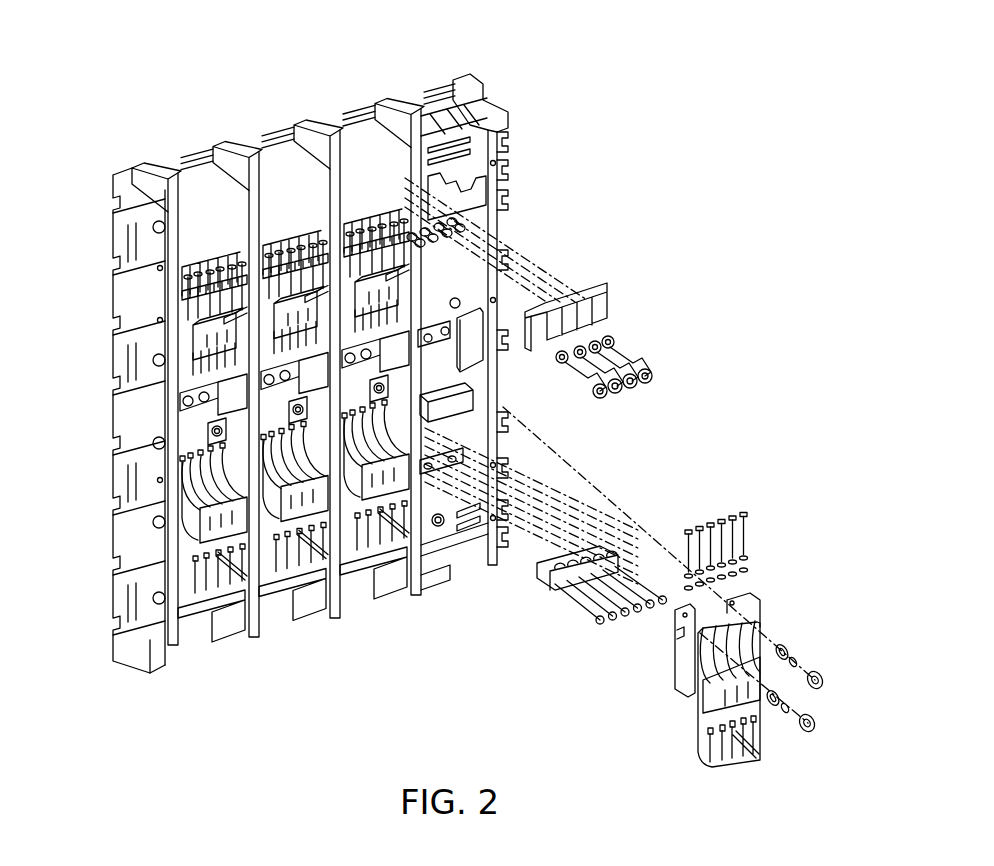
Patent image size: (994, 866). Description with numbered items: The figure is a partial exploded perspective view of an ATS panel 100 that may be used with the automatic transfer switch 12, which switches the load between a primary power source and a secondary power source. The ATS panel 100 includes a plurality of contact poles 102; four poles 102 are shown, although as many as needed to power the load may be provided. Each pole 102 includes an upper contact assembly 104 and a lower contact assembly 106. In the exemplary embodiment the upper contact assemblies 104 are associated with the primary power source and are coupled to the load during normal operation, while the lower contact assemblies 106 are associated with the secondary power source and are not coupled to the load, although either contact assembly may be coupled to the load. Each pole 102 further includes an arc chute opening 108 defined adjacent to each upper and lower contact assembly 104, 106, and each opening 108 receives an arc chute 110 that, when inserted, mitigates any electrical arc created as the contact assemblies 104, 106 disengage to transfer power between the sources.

The automatic transfer switch 12 is at (702, 46).
The ATS panel 100 is at (105, 372).
The contact pole 102 is at (256, 163).
The upper contact assembly 104 is at (298, 232).
The lower contact assembly 106 is at (375, 466).
The arc chute opening 108 is at (360, 172).
The arc chute 110 is at (482, 115).